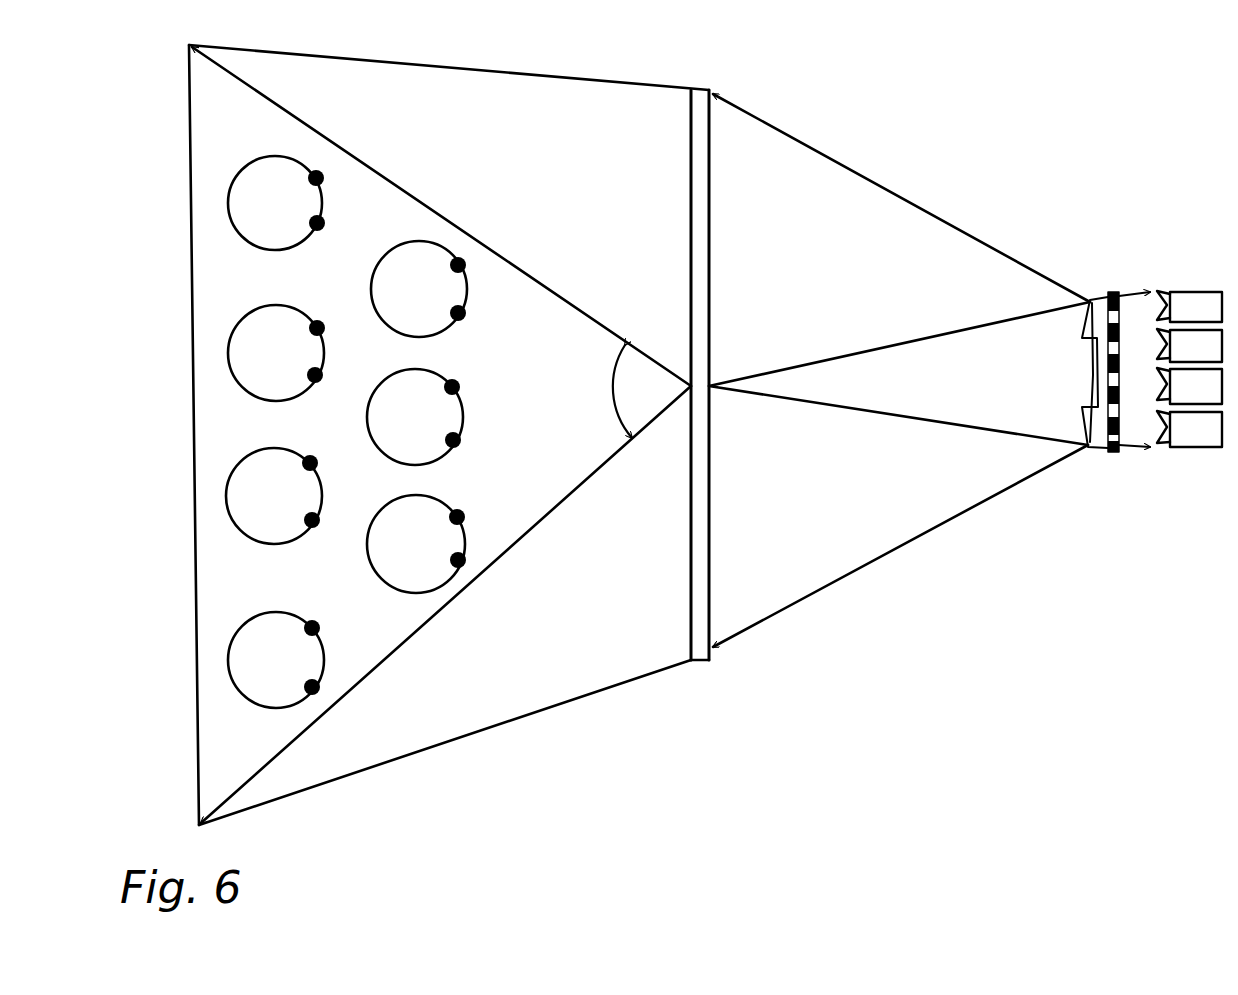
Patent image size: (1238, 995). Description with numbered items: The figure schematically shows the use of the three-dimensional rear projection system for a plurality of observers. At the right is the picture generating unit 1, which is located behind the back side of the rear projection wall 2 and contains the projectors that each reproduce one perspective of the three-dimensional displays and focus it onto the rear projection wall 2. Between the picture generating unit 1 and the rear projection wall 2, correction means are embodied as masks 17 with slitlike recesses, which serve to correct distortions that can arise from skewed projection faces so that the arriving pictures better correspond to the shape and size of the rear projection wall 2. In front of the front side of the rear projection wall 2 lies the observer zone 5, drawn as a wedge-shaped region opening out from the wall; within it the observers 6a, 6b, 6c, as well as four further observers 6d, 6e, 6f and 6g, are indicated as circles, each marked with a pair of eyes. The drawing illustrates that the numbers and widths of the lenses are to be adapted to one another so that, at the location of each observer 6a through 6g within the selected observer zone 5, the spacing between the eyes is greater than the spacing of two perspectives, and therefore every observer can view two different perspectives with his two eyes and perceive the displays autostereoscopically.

The picture generating unit 1 is at (1198, 468).
The rear projection wall 2 is at (697, 675).
The observer zone 5 is at (575, 458).
The masks 17 is at (1125, 272).
The observer 6a is at (445, 420).
The observer 6b is at (450, 545).
The observer 6c is at (447, 292).
The further observer 6d is at (257, 177).
The further observer 6e is at (252, 327).
The further observer 6f is at (243, 515).
The further observer 6g is at (248, 668).